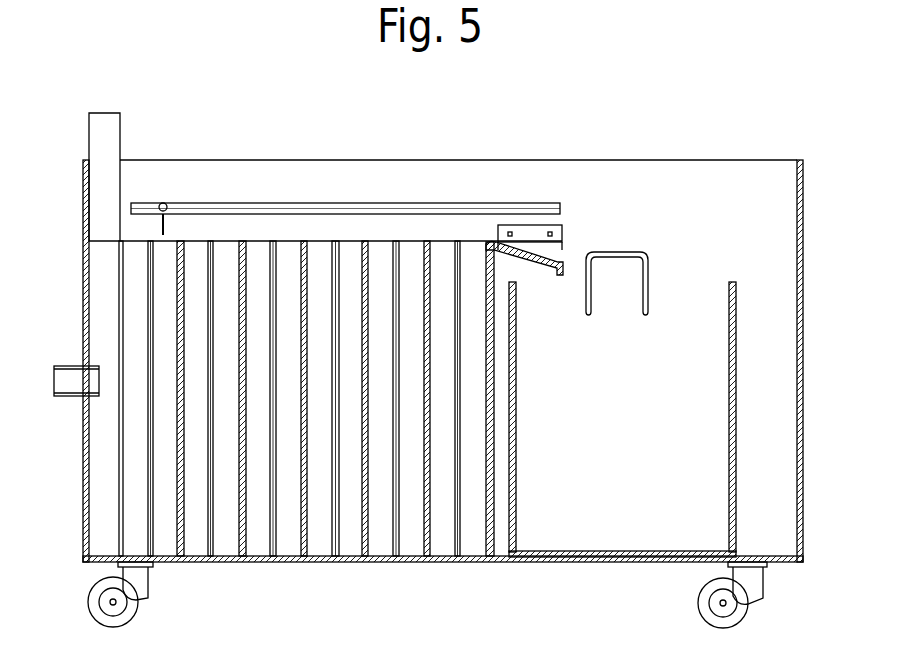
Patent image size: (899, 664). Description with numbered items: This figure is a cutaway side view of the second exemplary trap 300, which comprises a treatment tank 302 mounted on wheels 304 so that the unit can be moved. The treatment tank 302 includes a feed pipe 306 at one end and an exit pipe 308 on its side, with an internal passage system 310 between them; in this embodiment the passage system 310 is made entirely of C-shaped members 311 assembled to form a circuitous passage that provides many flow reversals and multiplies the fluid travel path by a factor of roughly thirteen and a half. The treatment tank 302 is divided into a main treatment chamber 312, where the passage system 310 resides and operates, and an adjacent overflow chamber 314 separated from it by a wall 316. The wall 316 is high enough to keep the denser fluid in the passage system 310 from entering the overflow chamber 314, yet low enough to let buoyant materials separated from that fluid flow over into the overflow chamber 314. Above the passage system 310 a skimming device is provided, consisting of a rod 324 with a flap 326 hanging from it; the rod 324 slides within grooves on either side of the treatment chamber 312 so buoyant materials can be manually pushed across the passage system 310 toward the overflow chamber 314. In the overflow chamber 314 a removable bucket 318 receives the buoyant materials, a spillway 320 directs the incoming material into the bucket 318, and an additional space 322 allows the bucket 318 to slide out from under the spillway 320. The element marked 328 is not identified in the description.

The trap 300 is at (518, 80).
The treatment tank 302 is at (803, 217).
The wheels 304 is at (132, 594).
The feed pipe 306 is at (120, 135).
The exit pipe 308 is at (63, 377).
The internal passage system 310 is at (325, 250).
The C-shaped members 311 is at (337, 493).
The main treatment chamber 312 is at (444, 172).
The overflow chamber 314 is at (717, 180).
The wall 316 is at (495, 440).
The removable bucket 318 is at (619, 300).
The spillway 320 is at (531, 250).
The additional space 322 is at (790, 432).
The rod 324 is at (165, 204).
The flap 326 is at (165, 223).
The cross bar 328 is at (276, 206).